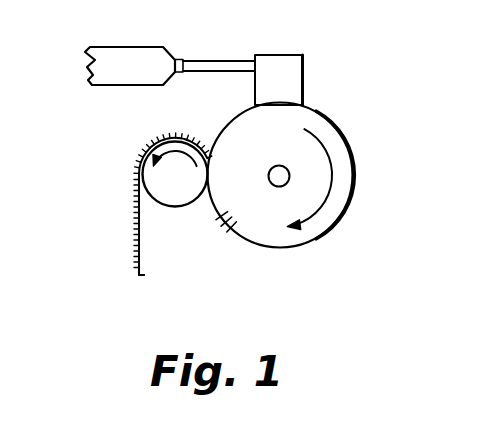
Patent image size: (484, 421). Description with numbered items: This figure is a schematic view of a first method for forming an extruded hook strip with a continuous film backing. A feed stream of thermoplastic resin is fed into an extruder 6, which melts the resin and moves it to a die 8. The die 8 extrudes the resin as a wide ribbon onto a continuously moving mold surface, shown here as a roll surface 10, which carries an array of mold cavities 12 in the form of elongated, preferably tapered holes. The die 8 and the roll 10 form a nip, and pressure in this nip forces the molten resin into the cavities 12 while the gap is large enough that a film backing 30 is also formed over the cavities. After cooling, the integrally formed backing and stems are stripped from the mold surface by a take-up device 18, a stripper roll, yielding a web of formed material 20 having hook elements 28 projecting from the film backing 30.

The extruder 6 is at (102, 47).
The die 8 is at (279, 54).
The roll surface 10 is at (338, 132).
The mold cavities 12 is at (230, 225).
The take-up device 18 is at (168, 207).
The formed material 20 is at (123, 222).
The hook elements 28 is at (140, 275).
The film backing 30 is at (142, 253).